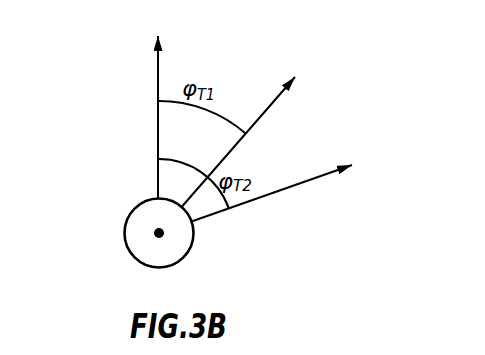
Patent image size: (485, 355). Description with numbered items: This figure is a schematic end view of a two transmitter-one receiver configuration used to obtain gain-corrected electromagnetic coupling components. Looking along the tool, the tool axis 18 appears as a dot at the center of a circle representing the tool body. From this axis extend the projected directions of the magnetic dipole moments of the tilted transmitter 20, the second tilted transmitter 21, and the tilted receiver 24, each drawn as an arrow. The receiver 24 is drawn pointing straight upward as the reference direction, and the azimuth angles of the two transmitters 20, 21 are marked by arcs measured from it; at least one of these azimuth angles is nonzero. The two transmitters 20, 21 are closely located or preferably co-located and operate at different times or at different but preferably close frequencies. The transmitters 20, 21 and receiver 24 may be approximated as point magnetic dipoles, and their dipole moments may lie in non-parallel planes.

The tool axis 18 is at (158, 233).
The transmitter 20 is at (278, 112).
The transmitter 21 is at (310, 182).
The receiver 24 is at (155, 107).